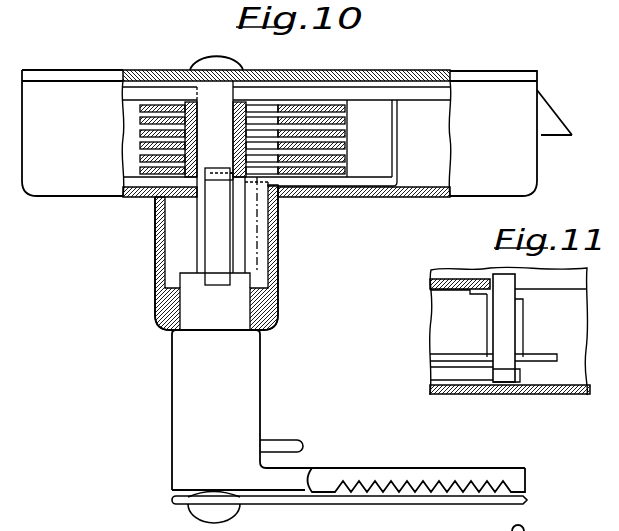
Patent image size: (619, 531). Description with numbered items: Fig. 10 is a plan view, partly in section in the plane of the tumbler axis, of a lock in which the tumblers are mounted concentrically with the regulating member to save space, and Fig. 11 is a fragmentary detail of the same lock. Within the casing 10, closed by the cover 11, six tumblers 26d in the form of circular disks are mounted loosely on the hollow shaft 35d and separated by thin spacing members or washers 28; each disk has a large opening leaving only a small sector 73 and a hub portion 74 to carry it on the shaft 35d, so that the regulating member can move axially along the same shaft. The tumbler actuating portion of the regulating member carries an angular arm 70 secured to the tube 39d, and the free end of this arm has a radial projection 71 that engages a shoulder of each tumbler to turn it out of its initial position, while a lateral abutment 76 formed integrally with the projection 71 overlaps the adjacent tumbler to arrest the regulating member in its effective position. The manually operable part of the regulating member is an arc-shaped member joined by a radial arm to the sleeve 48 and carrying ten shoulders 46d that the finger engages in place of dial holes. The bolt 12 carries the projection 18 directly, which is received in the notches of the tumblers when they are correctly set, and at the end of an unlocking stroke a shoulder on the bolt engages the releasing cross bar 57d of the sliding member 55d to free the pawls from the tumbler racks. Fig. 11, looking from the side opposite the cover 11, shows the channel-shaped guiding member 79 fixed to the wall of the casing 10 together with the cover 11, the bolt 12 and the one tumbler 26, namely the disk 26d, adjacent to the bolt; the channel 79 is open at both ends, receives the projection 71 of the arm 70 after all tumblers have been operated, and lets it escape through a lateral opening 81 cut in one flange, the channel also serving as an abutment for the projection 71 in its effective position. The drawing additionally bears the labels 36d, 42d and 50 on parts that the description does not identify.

In FIG. 10, the casing 10 is at (486, 189).
In FIG. 11, the casing 10 is at (456, 282).
In FIG. 10, the cover 11 is at (492, 72).
In FIG. 11, the cover 11 is at (557, 387).
In FIG. 10, the bolt 12 is at (405, 96).
In FIG. 11, the bolt 12 is at (457, 376).
In FIG. 10, the projection 18 is at (377, 165).
In FIG. 11, the tumblers 26 is at (454, 372).
In FIG. 10, the tumbler disks 26d is at (308, 108).
In FIG. 10, the spacing members or washers 28 is at (180, 120).
In FIG. 10, the hollow shaft 35d is at (222, 104).
In FIG. 10, the cup housing 36d is at (279, 246).
In FIG. 10, the tube 39d is at (242, 307).
In FIG. 10, the base plate 42d is at (527, 502).
In FIG. 10, the shoulders 46d is at (333, 486).
In FIG. 10, the sleeve 48 is at (253, 374).
In FIG. 10, the pin 50 is at (288, 445).
In FIG. 10, the sliding member 55d is at (349, 186).
In FIG. 10, the cross bar 57d is at (394, 148).
In FIG. 10, the angular arm 70 is at (213, 232).
In FIG. 11, the angular arm 70 is at (506, 323).
In FIG. 10, the radial projection 71 is at (213, 173).
In FIG. 11, the radial projection 71 is at (510, 380).
In FIG. 10, the sector 73 is at (150, 120).
In FIG. 10, the hub portion 74 is at (248, 103).
In FIG. 10, the lateral abutment 76 is at (231, 179).
In FIG. 11, the channel-shaped guiding member 79 is at (490, 318).
In FIG. 11, the lateral opening 81 is at (522, 295).